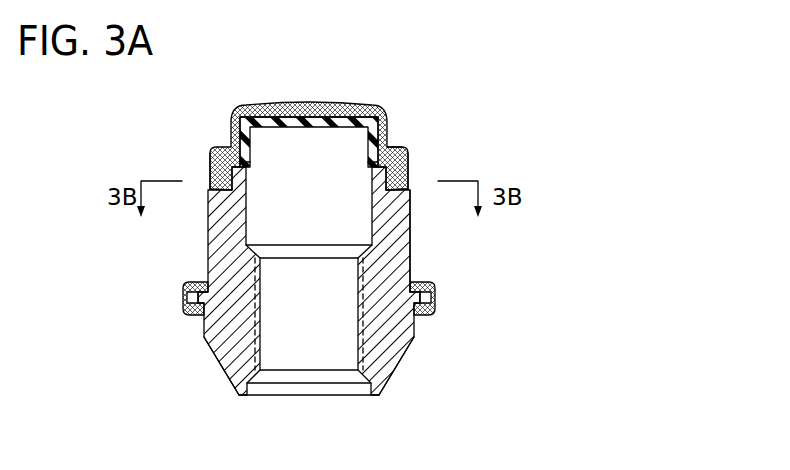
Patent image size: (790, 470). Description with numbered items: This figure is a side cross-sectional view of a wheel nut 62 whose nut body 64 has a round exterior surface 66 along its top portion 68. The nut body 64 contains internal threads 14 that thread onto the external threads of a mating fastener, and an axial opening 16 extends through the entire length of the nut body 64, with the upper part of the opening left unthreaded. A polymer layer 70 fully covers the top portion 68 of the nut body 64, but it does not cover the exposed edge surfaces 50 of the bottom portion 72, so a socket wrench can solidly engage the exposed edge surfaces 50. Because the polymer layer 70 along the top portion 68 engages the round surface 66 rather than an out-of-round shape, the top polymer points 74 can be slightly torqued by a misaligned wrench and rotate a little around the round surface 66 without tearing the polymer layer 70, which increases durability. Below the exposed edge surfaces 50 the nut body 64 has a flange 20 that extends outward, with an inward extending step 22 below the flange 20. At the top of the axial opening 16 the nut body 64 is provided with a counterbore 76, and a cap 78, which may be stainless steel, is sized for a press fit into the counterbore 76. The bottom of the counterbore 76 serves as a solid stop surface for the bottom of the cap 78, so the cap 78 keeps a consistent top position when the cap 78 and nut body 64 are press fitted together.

The internal threads 14 is at (262, 348).
The axial opening 16 is at (330, 180).
The flange 20 is at (183, 305).
The inward extending step 22 is at (188, 298).
The exposed edge surfaces 50 is at (208, 250).
The wheel nut 62 is at (402, 73).
The nut body 64 is at (405, 357).
The round exterior surface 66 is at (210, 158).
The top portion 68 is at (410, 177).
The polymer layer 70 is at (393, 147).
The bottom portion 72 is at (430, 263).
The top polymer points 74 is at (210, 172).
The counterbore 76 is at (242, 162).
The cap 78 is at (290, 127).